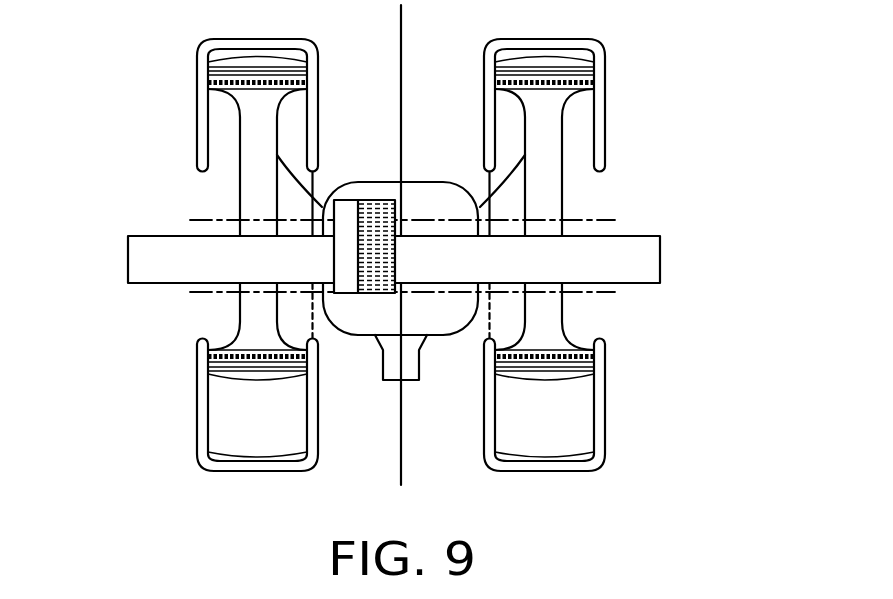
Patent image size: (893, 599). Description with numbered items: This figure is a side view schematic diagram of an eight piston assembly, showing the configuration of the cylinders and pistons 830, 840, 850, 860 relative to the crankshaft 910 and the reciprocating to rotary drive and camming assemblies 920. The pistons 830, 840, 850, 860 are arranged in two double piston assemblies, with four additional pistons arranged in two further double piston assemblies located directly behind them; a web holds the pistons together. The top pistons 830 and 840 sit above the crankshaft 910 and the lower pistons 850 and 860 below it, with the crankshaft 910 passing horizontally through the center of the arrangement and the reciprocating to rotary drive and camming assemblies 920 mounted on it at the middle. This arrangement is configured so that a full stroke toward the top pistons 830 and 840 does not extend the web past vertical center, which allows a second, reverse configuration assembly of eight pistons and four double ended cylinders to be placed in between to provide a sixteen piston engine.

The piston 830 is at (197, 57).
The piston 840 is at (603, 47).
The piston 850 is at (603, 454).
The piston 860 is at (197, 452).
The crankshaft 910 is at (647, 252).
The reciprocating to rotary drive and camming assemblies 920 is at (368, 200).